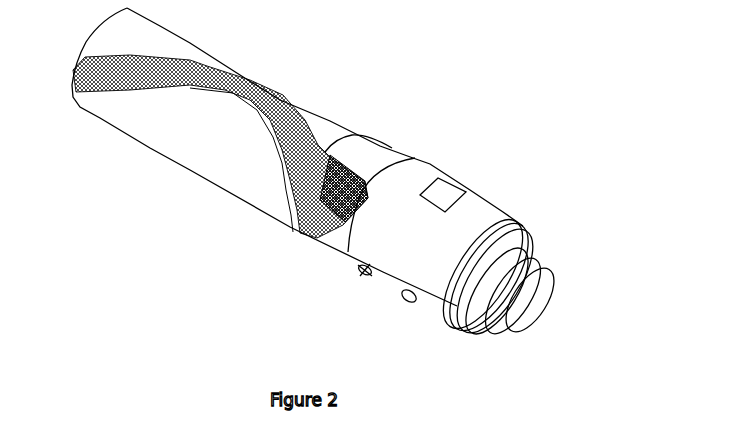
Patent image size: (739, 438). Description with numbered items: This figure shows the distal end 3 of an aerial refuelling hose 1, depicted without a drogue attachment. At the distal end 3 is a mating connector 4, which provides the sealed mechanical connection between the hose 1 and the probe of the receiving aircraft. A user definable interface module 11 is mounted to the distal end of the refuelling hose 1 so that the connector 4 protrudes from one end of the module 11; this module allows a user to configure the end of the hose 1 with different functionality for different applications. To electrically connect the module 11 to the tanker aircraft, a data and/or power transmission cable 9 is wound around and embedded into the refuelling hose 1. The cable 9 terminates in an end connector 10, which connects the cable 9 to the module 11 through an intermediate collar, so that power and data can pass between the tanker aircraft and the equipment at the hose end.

The refuelling hose 1 is at (95, 187).
The distal end 3 is at (523, 173).
The mating connector 4 is at (533, 305).
The data and/or power transmission cable 9 is at (207, 67).
The end connector 10 is at (357, 162).
The user definable interface (UDI) module 11 is at (370, 270).